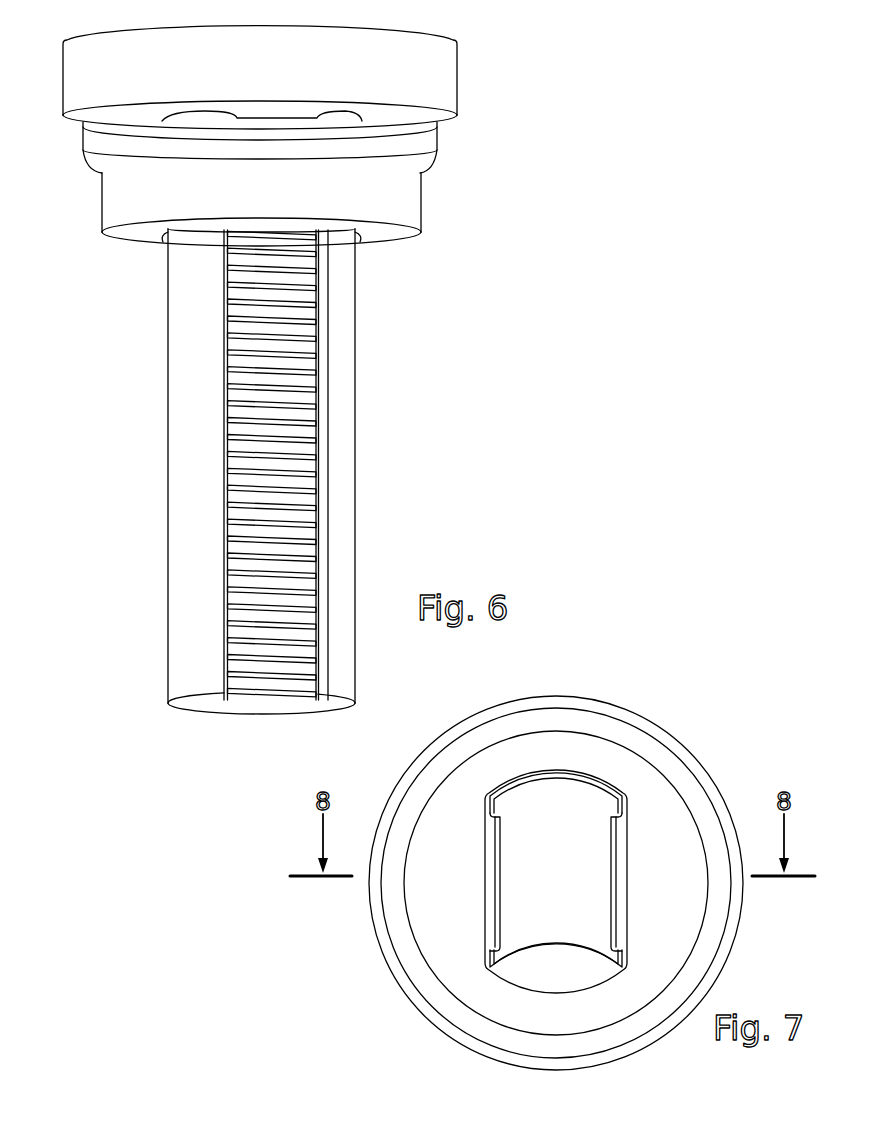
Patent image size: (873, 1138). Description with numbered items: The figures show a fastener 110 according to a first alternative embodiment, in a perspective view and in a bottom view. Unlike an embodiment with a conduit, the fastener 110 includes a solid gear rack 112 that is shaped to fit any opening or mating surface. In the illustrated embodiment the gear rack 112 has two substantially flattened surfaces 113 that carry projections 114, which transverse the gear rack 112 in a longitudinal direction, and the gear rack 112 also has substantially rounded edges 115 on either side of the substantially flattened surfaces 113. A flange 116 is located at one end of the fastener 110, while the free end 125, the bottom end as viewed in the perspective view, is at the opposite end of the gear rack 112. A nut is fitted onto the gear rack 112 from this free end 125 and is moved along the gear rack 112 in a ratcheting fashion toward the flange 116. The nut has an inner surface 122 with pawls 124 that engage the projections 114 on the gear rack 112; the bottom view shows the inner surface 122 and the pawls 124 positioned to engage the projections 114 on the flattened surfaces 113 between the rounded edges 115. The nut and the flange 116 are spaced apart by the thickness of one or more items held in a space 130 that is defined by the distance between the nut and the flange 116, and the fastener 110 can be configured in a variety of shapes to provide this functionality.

In FIG. 6, the fastener 110 is at (516, 71).
In FIG. 6, the gear rack 112 is at (318, 373).
In FIG. 6, the substantially flattened surfaces 113 is at (237, 713).
In FIG. 7, the substantially flattened surfaces 113 is at (607, 838).
In FIG. 6, the projections 114 is at (238, 432).
In FIG. 6, the substantially rounded edges 115 is at (342, 510).
In FIG. 7, the substantially rounded edges 115 is at (553, 993).
In FIG. 6, the flange 116 is at (447, 90).
In FIG. 6, the inner surface 122 is at (435, 146).
In FIG. 7, the inner surface 122 is at (667, 740).
In FIG. 7, the pawls 124 is at (485, 893).
In FIG. 6, the free end 125 is at (283, 698).
In FIG. 7, the free end 125 is at (548, 813).
In FIG. 6, the space 130 is at (93, 121).